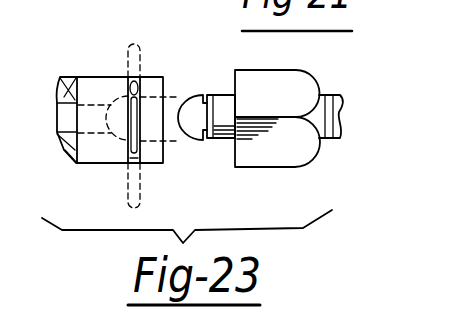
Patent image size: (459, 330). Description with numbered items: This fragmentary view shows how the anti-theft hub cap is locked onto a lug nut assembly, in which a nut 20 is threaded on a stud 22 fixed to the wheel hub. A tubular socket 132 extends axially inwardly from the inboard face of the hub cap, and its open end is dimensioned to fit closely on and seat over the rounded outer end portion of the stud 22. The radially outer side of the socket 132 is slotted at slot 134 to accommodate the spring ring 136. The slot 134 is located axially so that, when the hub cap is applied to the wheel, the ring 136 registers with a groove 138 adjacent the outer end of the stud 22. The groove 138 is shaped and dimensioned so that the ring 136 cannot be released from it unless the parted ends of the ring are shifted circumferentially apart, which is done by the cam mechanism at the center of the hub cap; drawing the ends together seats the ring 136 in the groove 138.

The nut 20 is at (290, 79).
The stud 22 is at (338, 98).
The tubular socket 132 is at (93, 83).
The slot 134 is at (142, 90).
The spring ring 136 is at (129, 177).
The groove 138 is at (231, 49).